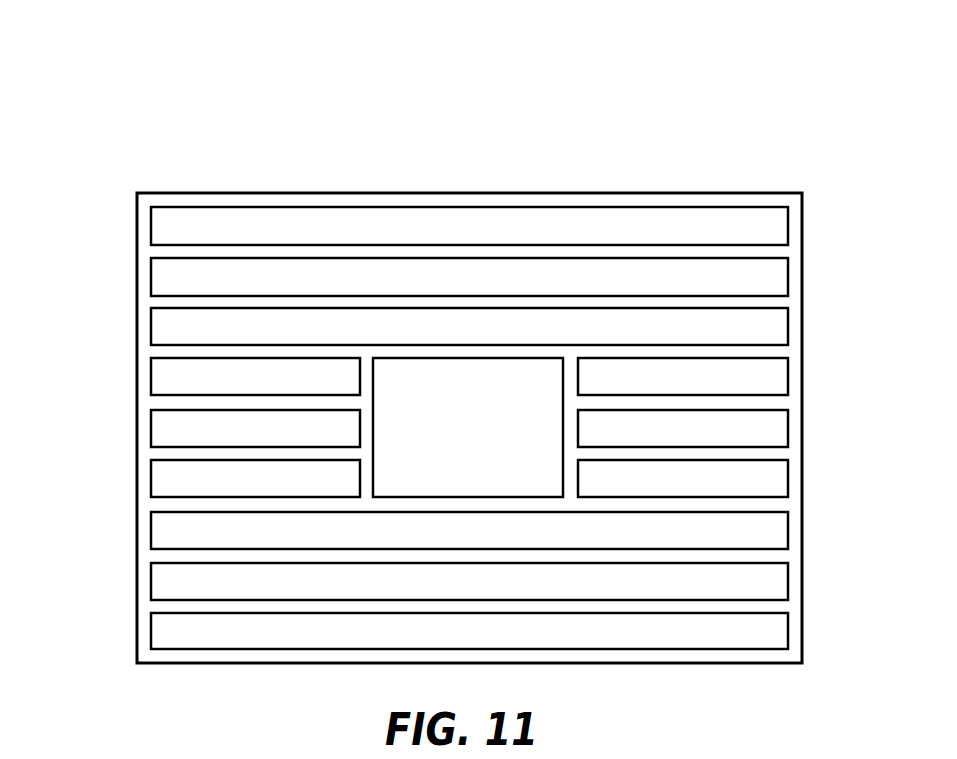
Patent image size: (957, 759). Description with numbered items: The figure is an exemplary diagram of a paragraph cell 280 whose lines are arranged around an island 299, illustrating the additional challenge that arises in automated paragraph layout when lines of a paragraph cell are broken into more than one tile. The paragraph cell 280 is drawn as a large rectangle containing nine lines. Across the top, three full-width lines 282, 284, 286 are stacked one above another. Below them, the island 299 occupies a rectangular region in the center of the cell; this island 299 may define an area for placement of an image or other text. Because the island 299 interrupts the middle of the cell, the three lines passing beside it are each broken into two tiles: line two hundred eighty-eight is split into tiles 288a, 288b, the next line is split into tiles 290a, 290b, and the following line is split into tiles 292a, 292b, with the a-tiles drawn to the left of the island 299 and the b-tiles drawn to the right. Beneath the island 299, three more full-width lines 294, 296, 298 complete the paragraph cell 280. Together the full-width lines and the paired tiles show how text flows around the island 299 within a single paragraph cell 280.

The paragraph cell 280 is at (268, 176).
The line 282 is at (788, 229).
The line 284 is at (788, 280).
The line 286 is at (788, 330).
The tile 288a is at (151, 378).
The tile 288b is at (788, 380).
The tile 290a is at (151, 428).
The tile 290b is at (788, 430).
The tile 292a is at (151, 478).
The tile 292b is at (788, 480).
The line 294 is at (788, 532).
The line 296 is at (788, 583).
The line 298 is at (788, 633).
The island 299 is at (508, 358).